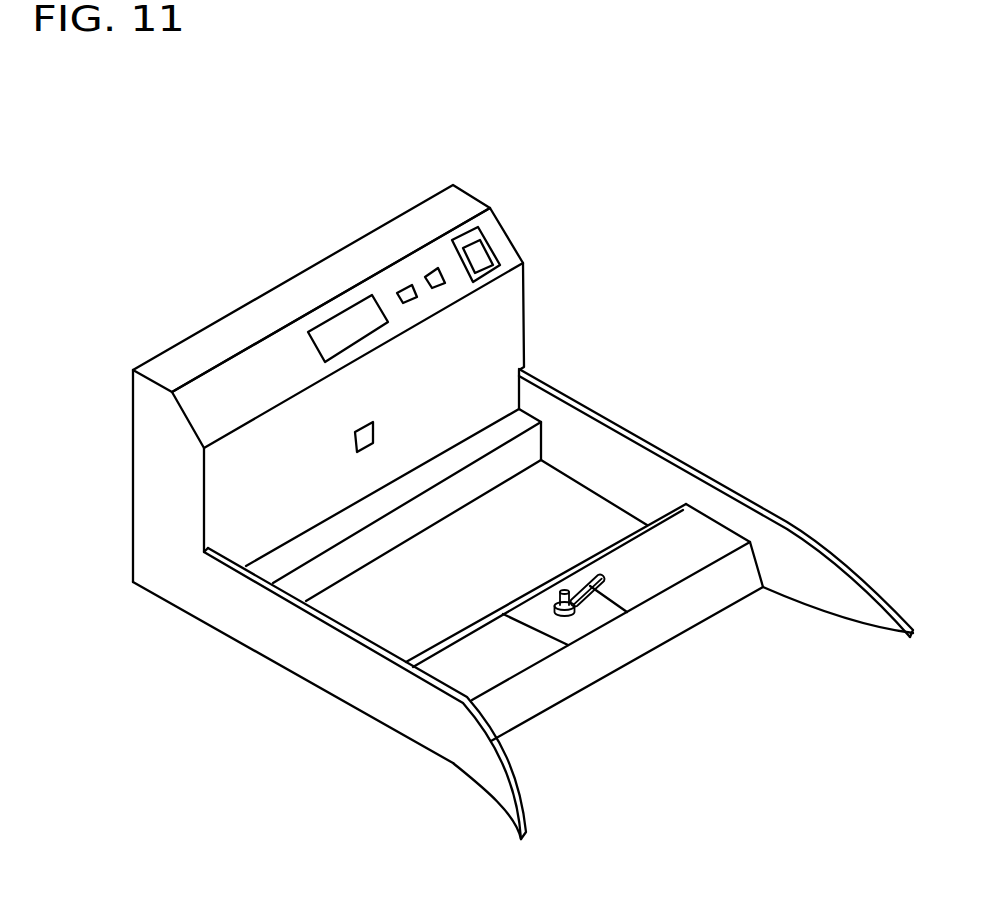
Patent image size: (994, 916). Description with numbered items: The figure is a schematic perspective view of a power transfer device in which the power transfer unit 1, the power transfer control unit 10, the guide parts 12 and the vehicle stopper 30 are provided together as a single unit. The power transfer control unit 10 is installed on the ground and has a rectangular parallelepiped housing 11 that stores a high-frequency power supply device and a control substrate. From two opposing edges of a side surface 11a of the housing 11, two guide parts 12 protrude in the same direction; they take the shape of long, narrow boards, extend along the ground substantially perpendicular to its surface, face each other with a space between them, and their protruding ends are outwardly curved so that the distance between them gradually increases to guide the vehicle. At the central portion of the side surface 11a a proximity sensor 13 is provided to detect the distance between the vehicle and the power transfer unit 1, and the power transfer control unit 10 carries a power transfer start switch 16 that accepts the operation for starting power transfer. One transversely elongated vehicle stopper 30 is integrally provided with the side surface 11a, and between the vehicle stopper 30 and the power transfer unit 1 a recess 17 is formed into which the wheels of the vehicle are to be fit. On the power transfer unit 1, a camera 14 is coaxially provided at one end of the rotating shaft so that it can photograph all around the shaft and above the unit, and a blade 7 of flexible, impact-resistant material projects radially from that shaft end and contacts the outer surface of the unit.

The power transfer control unit 10 is at (399, 210).
The housing 11 is at (152, 443).
The side surface 11a is at (510, 305).
The guide part 12 is at (655, 440).
The proximity sensor 13 is at (355, 452).
The power transfer start switch 16 is at (480, 258).
The vehicle stopper 30 is at (523, 422).
The recess 17 is at (557, 497).
The power transfer unit 1 is at (587, 618).
The blade 7 is at (605, 578).
The camera 14 is at (560, 614).